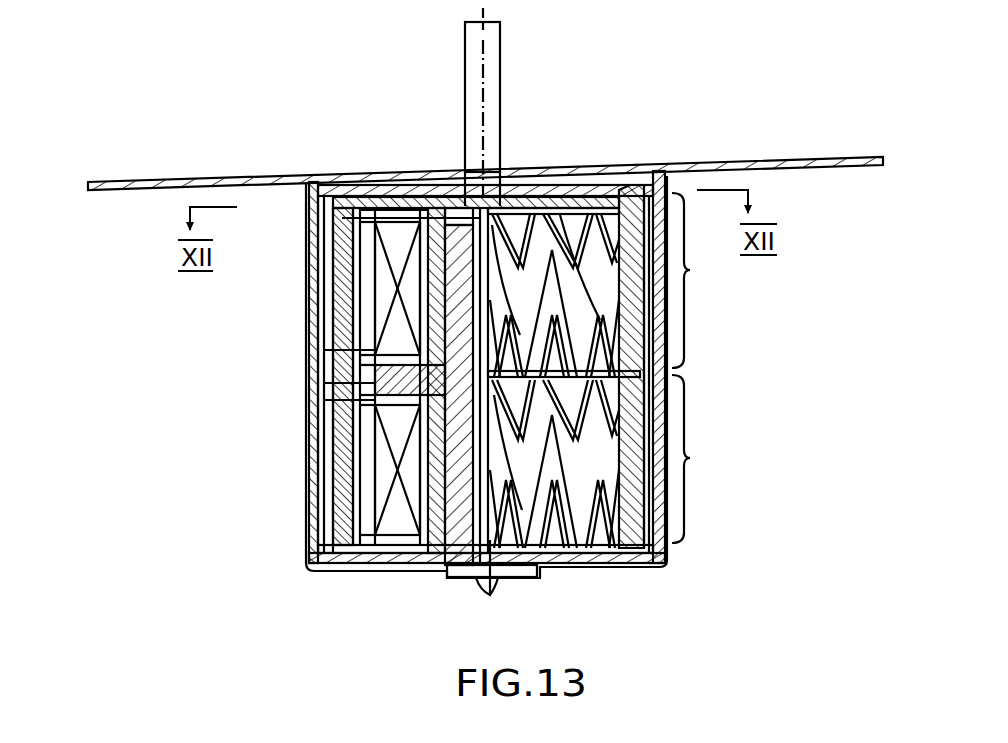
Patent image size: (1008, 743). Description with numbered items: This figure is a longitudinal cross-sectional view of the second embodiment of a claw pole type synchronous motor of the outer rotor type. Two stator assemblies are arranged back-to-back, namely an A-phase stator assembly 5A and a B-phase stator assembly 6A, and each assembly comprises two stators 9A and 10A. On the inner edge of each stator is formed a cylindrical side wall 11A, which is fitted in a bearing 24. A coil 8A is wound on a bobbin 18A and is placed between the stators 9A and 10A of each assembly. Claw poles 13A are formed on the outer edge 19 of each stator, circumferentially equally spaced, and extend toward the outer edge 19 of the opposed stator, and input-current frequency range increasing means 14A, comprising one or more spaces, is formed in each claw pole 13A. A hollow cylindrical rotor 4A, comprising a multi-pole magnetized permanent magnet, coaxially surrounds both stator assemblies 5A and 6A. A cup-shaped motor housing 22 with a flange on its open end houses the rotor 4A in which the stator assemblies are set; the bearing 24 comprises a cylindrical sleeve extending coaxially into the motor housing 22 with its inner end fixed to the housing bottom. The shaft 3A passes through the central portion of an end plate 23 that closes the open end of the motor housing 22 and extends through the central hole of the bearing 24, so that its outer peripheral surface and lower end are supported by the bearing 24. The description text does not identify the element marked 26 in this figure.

The shaft 3A is at (502, 72).
The motor housing 22 is at (722, 154).
The case 26 is at (368, 212).
The outer edge 19 is at (365, 207).
The end plate 23 is at (388, 190).
The stator 9A is at (398, 216).
The input-current frequency range increasing means 14A is at (345, 392).
The claw poles 13A is at (362, 288).
The bobbin 18A is at (375, 240).
The coil 8A is at (375, 273).
The stator 10A is at (388, 356).
The cylindrical side wall 11A is at (455, 550).
The bearing 24 is at (510, 578).
The A-phase stator assembly 5A is at (609, 285).
The rotor 4A is at (641, 378).
The B-phase stator assembly 6A is at (610, 461).